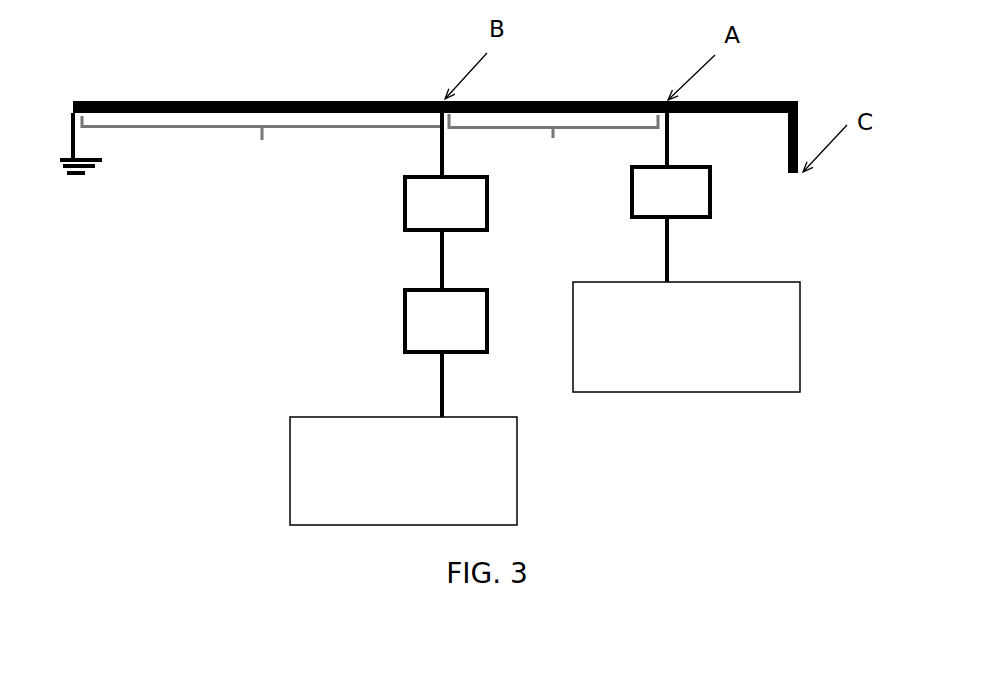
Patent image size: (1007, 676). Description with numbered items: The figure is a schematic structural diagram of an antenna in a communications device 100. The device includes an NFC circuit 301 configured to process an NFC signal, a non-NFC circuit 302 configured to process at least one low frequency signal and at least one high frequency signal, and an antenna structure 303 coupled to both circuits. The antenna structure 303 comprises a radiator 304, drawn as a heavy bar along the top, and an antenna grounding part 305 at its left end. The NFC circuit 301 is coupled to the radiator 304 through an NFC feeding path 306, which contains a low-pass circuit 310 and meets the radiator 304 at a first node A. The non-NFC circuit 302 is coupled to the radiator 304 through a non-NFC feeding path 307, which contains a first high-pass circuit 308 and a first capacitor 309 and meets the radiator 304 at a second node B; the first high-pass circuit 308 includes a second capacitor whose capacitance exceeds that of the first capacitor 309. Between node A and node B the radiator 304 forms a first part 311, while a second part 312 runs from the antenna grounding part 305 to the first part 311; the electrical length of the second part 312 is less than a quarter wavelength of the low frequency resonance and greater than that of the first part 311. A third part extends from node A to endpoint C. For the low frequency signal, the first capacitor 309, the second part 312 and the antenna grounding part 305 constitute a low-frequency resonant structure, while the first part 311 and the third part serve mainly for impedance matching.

The communications device 100 is at (275, 282).
The NFC circuit 301 is at (686, 337).
The non-NFC circuit 302 is at (403, 471).
The antenna structure 303 is at (787, 79).
The radiator 304 is at (502, 98).
The antenna grounding part 305 is at (97, 187).
The NFC feeding path 306 is at (687, 250).
The non-NFC feeding path 307 is at (459, 262).
The first high-pass circuit 308 is at (446, 203).
The first capacitor 309 is at (446, 321).
The low-pass circuit 310 is at (671, 192).
The first part 311 is at (553, 143).
The second part 312 is at (261, 145).